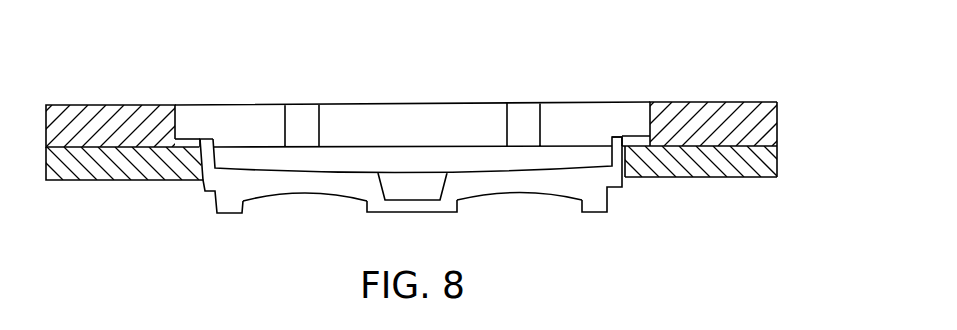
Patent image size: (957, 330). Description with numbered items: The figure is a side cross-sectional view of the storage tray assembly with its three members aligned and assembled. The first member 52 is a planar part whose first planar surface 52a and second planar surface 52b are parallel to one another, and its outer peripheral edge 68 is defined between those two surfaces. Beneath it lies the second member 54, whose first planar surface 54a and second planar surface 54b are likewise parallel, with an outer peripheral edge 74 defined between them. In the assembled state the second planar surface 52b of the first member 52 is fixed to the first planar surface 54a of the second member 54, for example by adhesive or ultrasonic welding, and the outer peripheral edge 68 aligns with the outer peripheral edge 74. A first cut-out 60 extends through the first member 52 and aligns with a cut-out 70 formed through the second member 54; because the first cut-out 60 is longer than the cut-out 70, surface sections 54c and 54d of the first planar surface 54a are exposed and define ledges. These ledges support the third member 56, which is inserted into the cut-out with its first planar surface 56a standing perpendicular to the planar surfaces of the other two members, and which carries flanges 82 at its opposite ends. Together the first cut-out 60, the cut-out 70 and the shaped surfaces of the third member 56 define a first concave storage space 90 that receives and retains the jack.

The first member 52 is at (700, 122).
The first planar surface 52a is at (82, 103).
The second planar surface 52b is at (80, 150).
The second member 54 is at (699, 162).
The first planar surface 54a is at (118, 147).
The second planar surface 54b is at (131, 180).
The surface section 54c is at (198, 146).
The surface section 54d is at (640, 150).
The third member 56 is at (595, 212).
The first planar surface 56a is at (513, 183).
The first cut-out 60 is at (399, 125).
The outer peripheral edge 68 is at (778, 118).
The cut-out 70 is at (435, 160).
The outer peripheral edge 74 is at (778, 163).
The flanges 82 is at (182, 145).
The first concave storage space 90 is at (338, 160).